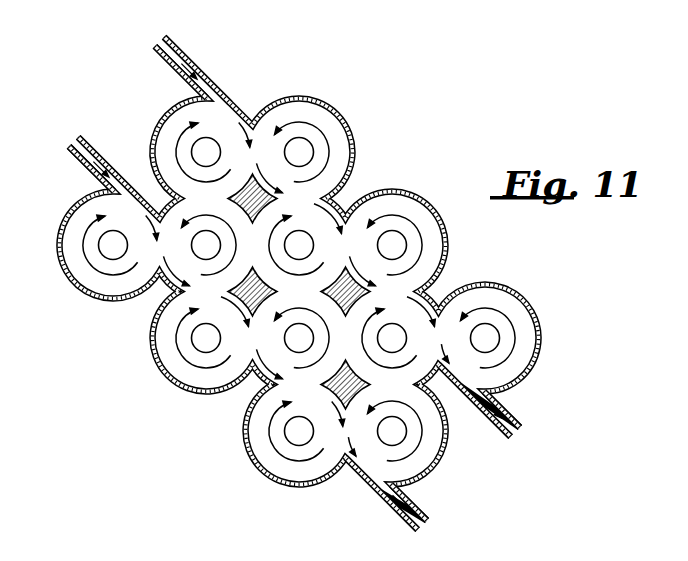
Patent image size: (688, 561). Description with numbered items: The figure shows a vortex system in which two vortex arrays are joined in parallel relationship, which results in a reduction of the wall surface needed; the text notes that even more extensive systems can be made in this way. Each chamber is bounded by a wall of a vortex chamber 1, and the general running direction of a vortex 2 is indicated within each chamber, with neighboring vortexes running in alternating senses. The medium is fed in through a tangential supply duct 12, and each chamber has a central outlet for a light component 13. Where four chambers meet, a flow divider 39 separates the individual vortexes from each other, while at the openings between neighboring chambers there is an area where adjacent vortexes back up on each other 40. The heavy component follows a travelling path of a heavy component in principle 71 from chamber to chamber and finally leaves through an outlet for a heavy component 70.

The wall of a vortex chamber 1 is at (531, 355).
The general running direction of a vortex 2 is at (183, 145).
The tangential supply duct 12 is at (190, 57).
The outlet for a light component 13 is at (202, 148).
The flow divider 39 is at (326, 289).
The area where adjacent vortexes back up on each other 40 is at (347, 242).
The outlet for a heavy component 70 is at (519, 428).
The travelling path of a heavy component in principle 71 is at (244, 318).